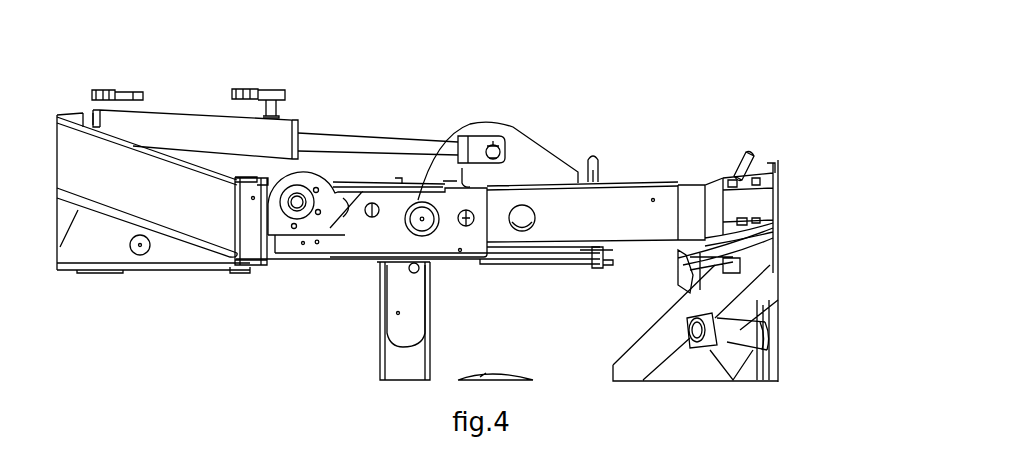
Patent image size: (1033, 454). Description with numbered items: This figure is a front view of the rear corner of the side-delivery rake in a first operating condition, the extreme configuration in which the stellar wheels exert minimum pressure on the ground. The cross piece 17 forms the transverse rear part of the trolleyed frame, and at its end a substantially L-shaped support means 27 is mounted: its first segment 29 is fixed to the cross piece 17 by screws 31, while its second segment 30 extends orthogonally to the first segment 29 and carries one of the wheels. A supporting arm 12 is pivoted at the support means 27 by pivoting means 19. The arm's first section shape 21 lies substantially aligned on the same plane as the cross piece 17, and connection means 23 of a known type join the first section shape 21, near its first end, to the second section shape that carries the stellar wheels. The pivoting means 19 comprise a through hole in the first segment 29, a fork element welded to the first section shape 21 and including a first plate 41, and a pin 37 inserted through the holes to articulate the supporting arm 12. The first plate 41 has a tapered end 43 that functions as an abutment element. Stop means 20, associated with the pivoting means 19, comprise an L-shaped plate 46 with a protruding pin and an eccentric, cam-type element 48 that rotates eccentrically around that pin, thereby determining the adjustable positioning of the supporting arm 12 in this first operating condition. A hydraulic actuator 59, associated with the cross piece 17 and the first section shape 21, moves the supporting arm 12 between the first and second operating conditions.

The supporting arm 12 is at (771, 158).
The cross piece 17 is at (253, 198).
The pivoting means 19 is at (400, 238).
The stop means 20 is at (303, 244).
The first section shape 21 is at (653, 200).
The connection means 23 is at (731, 154).
The support means 27 is at (368, 170).
The first segment 29 is at (272, 253).
The second segment 30 is at (420, 367).
The screws 31 is at (141, 247).
The pin 37 is at (423, 217).
The first plate 41 is at (460, 250).
The tapered end 43 is at (317, 244).
The L-shaped plate 46 is at (398, 313).
The eccentric element 48 is at (318, 208).
The hydraulic actuator 59 is at (149, 117).